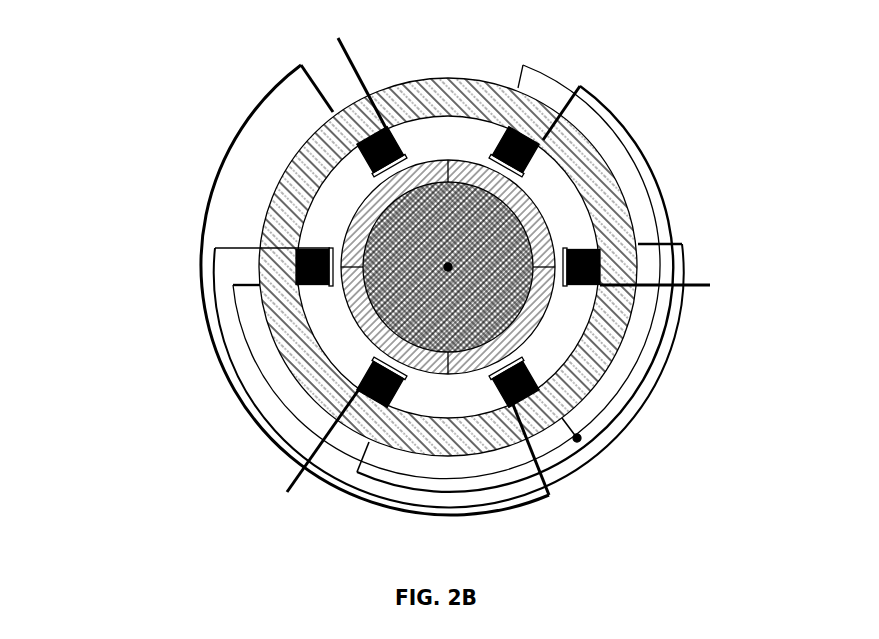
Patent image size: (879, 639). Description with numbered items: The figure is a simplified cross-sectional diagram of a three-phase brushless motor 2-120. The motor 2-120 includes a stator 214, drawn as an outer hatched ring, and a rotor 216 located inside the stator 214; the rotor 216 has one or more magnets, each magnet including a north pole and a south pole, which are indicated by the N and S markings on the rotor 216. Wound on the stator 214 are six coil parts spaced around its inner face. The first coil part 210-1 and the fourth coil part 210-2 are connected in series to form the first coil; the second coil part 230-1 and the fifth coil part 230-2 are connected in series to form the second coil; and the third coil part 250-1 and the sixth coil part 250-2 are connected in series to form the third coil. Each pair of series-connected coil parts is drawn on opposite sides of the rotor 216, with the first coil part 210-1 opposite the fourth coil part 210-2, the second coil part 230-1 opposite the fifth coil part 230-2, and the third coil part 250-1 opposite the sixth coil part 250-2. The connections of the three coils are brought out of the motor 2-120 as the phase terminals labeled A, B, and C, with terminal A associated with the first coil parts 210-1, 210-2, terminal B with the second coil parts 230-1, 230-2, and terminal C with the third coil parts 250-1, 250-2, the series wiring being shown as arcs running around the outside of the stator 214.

The three-phase brushless motor 2-120 is at (147, 31).
The stator 214 is at (277, 188).
The rotor 216 is at (403, 277).
The first coil part 210-1 is at (375, 122).
The fourth coil part 210-2 is at (528, 400).
The second coil part 230-1 is at (370, 374).
The fifth coil part 230-2 is at (530, 140).
The third coil part 250-1 is at (603, 253).
The sixth coil part 250-2 is at (312, 255).
The phase A terminal A is at (375, 263).
The phase B terminal B is at (469, 305).
The phase C terminal C is at (473, 375).